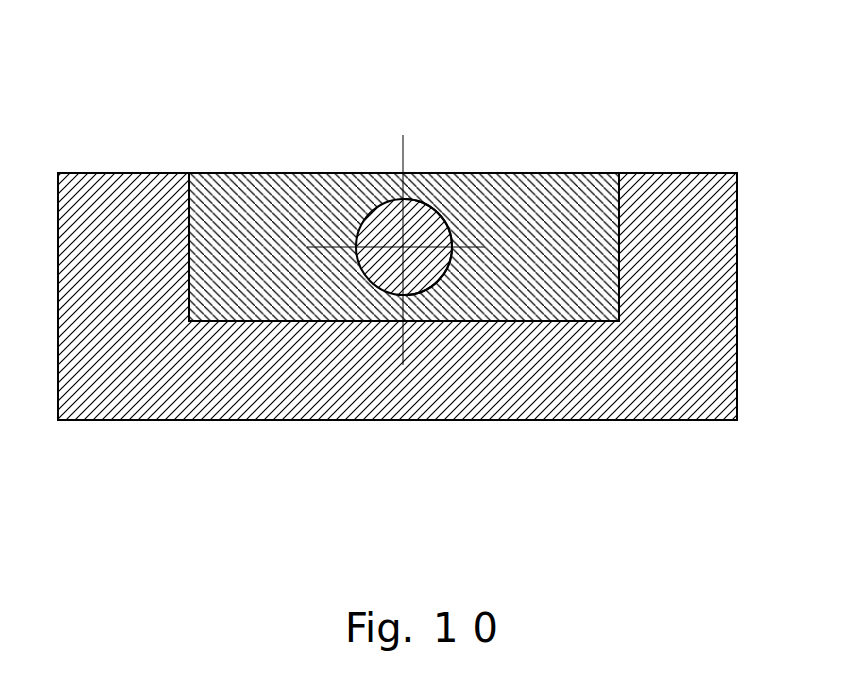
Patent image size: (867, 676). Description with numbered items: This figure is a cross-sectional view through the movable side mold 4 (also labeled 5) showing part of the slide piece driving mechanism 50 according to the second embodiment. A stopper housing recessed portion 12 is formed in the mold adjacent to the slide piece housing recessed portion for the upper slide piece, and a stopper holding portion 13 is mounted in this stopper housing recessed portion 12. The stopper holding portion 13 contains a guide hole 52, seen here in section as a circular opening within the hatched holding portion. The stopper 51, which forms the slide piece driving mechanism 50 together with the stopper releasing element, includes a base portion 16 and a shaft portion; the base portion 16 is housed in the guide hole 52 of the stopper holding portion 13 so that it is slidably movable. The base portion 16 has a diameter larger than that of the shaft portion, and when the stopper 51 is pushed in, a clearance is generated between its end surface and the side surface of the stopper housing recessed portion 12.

The movable side mold 4 is at (397, 222).
The base member (alternative) 5 is at (653, 160).
The stopper housing recessed portion 12 is at (250, 319).
The stopper holding portion 13 is at (252, 193).
The base portion 16 is at (425, 213).
The slide piece driving mechanism 50 is at (384, 160).
The stopper 51 is at (445, 217).
The guide hole 52 is at (447, 268).